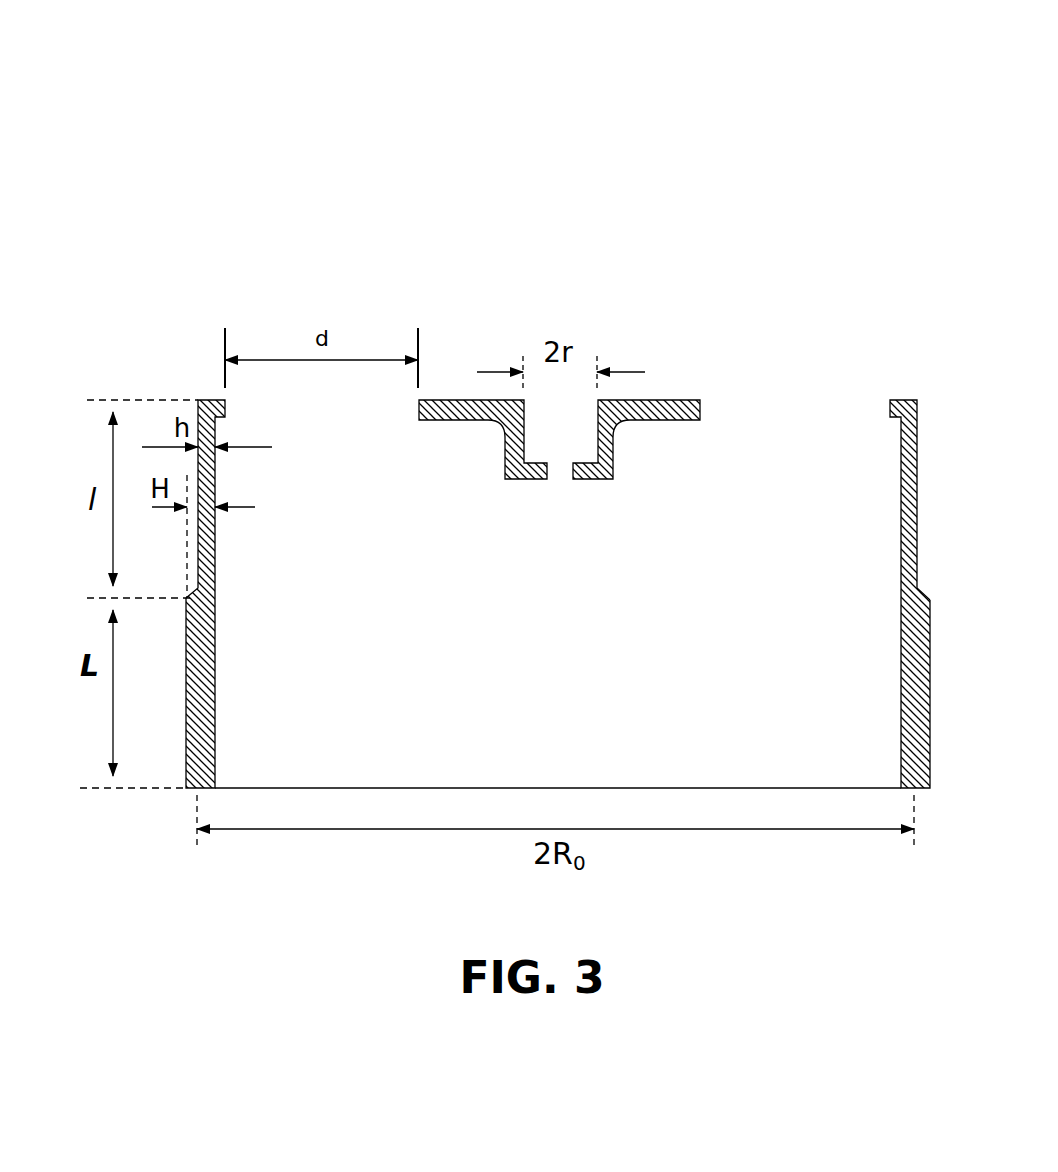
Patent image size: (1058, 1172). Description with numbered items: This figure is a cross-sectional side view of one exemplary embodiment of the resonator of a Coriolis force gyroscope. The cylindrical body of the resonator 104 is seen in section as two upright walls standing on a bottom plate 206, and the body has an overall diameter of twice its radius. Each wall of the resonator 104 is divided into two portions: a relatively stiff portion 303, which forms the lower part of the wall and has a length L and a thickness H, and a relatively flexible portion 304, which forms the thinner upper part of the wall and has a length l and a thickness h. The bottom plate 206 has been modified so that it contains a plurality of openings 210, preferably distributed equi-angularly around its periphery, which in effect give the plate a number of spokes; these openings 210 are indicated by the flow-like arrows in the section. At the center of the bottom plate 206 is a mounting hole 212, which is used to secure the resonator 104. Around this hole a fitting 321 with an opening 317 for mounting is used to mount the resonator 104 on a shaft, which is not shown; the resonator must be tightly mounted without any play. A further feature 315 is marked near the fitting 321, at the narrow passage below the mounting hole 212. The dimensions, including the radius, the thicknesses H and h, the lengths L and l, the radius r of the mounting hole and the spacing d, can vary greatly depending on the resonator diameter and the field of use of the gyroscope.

The resonator body 104 is at (447, 222).
The bottom plate 206 is at (442, 421).
The openings 210 is at (352, 434).
The mounting hole 212 is at (575, 392).
The relatively stiff portion 303 is at (188, 752).
The relatively flexible portion 304 is at (213, 543).
The exhaust opening 315 is at (533, 486).
The opening 317 is at (564, 486).
The fitting 321 is at (505, 452).